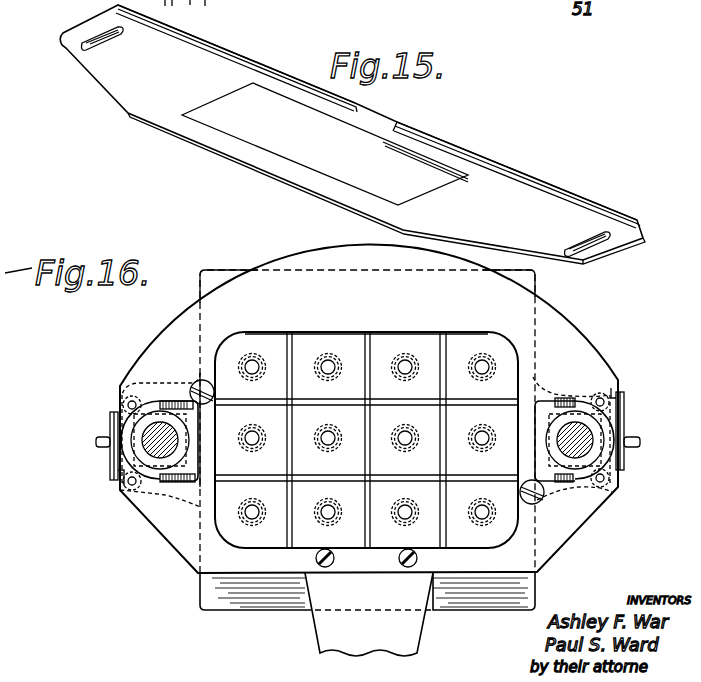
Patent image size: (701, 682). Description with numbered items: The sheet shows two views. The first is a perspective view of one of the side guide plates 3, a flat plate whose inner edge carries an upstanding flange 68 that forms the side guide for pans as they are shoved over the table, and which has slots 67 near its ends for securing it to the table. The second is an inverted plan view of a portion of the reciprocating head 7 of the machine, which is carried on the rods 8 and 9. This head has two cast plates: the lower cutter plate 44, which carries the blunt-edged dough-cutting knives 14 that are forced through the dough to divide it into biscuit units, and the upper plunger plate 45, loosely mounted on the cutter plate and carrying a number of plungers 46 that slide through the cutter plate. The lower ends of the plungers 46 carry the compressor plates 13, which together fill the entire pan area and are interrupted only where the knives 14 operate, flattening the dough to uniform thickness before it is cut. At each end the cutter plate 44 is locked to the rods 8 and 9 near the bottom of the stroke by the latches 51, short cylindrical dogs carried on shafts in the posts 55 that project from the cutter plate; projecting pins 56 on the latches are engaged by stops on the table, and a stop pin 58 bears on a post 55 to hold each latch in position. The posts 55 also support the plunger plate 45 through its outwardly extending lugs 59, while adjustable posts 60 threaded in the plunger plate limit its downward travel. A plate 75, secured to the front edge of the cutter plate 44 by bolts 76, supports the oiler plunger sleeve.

In FIG. 15, the guide plate 3 is at (352, 134).
In FIG. 15, the slots 67 is at (85, 48).
In FIG. 15, the upstanding flanges 68 is at (238, 60).
In FIG. 16, the reciprocating head 7 is at (264, 251).
In FIG. 16, the rod 8 is at (570, 422).
In FIG. 16, the rod 9 is at (152, 424).
In FIG. 16, the compressor plates 13 is at (381, 336).
In FIG. 16, the dough-cutting knives 14 is at (453, 400).
In FIG. 16, the cutter plate 44 is at (185, 553).
In FIG. 16, the plunger plate 45 is at (208, 592).
In FIG. 16, the plungers 46 is at (327, 380).
In FIG. 16, the latches 51 is at (110, 418).
In FIG. 16, the posts 55 is at (123, 398).
In FIG. 16, the projecting pins 56 is at (96, 442).
In FIG. 16, the stop pin 58 is at (122, 481).
In FIG. 16, the lugs 59 is at (160, 496).
In FIG. 16, the adjustable posts 60 is at (197, 382).
In FIG. 16, the plate 75 is at (369, 614).
In FIG. 16, the bolts 76 is at (405, 566).